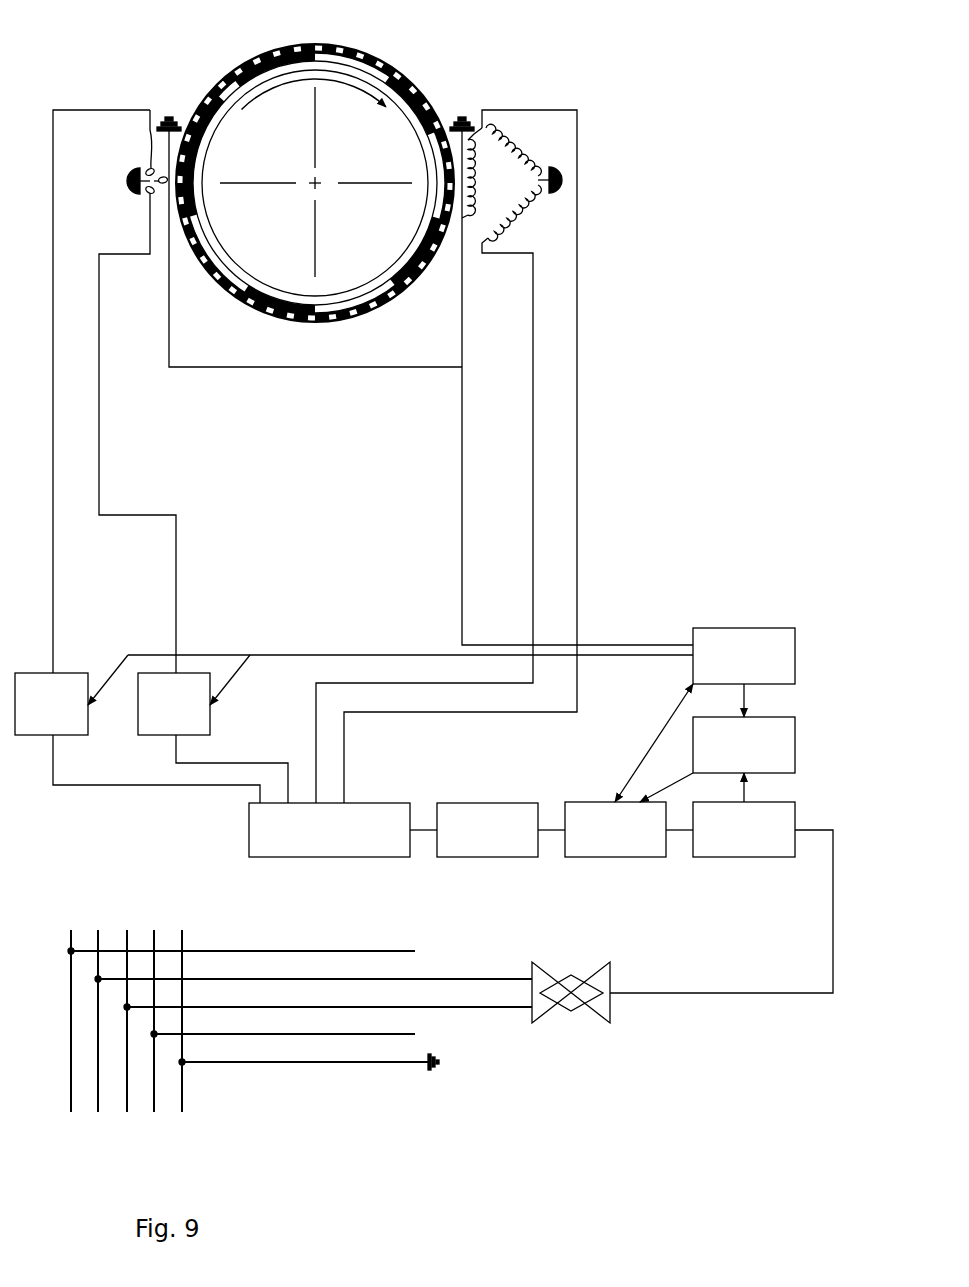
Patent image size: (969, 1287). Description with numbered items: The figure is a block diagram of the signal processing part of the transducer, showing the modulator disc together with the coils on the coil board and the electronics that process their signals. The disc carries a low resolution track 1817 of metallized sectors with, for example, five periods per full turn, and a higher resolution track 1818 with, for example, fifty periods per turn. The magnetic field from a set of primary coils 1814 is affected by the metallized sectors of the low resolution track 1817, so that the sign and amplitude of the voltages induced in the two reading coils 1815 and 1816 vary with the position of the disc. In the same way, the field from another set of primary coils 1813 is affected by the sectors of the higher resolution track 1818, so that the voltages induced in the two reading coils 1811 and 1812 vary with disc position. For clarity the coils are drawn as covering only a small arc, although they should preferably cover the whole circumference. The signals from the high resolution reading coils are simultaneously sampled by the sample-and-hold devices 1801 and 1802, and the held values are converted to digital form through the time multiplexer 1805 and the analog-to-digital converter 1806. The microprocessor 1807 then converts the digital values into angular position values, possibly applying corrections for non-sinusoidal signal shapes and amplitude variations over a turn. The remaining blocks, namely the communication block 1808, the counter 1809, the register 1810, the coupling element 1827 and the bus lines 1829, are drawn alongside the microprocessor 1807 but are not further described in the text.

The sample-and-hold device 1801 is at (62, 738).
The sample-and-hold device 1802 is at (186, 738).
The time multiplexer 1805 is at (365, 862).
The analog-to-digital converter 1806 is at (470, 862).
The microprocessor 1807 is at (600, 862).
The communication unit 1808 is at (728, 862).
The counter 1809 is at (770, 626).
The register 1810 is at (770, 716).
The reading coil 1811 is at (146, 172).
The reading coil 1812 is at (147, 192).
The set of primary coils 1813 is at (160, 116).
The set of primary coils 1814 is at (478, 128).
The reading coil 1815 is at (519, 155).
The reading coil 1816 is at (530, 202).
The low resolution track 1817 is at (212, 72).
The higher resolution track 1818 is at (366, 48).
The optocoupler 1827 is at (568, 978).
The bus 1829 is at (110, 943).